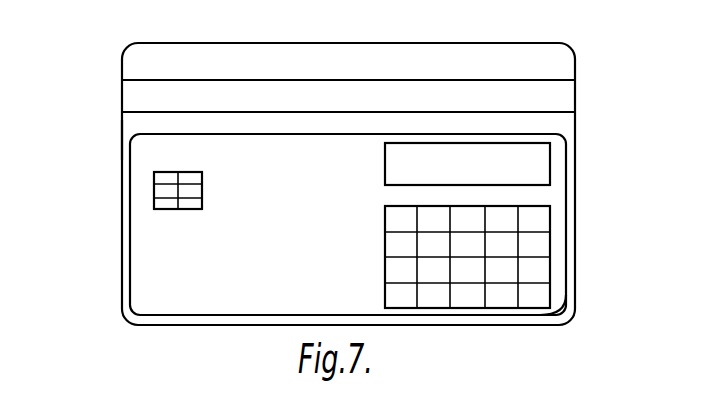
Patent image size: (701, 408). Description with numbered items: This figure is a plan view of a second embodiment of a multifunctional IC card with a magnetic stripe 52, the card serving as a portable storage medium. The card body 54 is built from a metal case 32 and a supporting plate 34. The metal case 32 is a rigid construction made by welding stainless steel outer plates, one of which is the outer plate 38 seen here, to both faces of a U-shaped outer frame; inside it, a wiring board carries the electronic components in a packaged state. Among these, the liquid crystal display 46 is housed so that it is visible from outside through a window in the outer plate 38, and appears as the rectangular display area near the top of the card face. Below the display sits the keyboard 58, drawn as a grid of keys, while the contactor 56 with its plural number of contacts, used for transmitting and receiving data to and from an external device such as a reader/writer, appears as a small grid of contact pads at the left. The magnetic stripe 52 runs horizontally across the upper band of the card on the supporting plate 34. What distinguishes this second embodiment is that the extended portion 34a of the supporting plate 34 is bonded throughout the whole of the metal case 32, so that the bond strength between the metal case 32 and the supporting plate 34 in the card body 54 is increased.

The metal case 32 is at (122, 262).
The supporting plate 34 is at (385, 57).
The extended portion 34a is at (533, 318).
The outer plate 38 is at (261, 294).
The liquid crystal display 46 is at (543, 172).
The magnetic stripe 52 is at (556, 99).
The card body 54 is at (118, 143).
The contactor 56 is at (155, 188).
The keyboard 58 is at (545, 248).